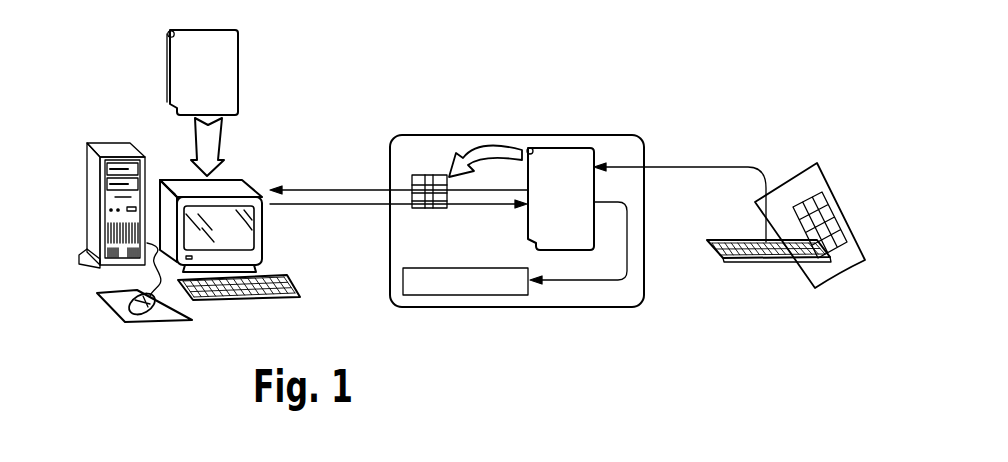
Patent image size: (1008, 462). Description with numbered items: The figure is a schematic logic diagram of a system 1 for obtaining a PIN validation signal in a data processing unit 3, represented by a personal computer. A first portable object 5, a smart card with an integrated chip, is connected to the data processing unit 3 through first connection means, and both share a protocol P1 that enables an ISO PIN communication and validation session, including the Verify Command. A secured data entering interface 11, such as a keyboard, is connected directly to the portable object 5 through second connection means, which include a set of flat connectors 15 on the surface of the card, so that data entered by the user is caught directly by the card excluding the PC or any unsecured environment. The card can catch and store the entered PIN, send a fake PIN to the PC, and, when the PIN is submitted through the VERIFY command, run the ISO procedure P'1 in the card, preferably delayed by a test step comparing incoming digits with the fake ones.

The system 1 is at (346, 51).
The data processing unit 3 is at (238, 181).
The first portable object 5 is at (517, 230).
The secured data entering interface 11 is at (774, 278).
The flat connectors 15 is at (429, 166).
The protocol P1 is at (202, 72).
The ISO procedure in the card P'1 is at (465, 309).